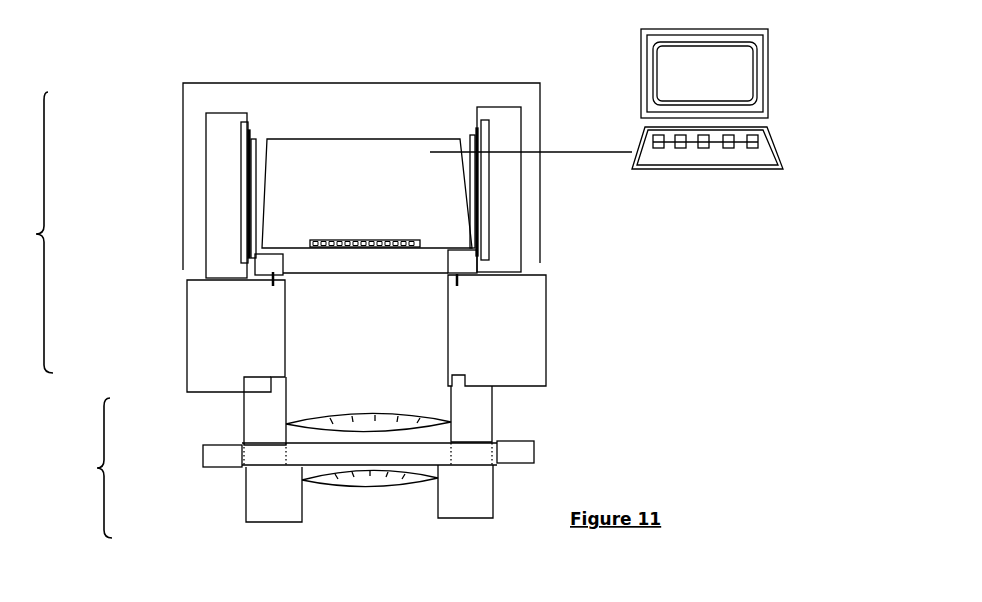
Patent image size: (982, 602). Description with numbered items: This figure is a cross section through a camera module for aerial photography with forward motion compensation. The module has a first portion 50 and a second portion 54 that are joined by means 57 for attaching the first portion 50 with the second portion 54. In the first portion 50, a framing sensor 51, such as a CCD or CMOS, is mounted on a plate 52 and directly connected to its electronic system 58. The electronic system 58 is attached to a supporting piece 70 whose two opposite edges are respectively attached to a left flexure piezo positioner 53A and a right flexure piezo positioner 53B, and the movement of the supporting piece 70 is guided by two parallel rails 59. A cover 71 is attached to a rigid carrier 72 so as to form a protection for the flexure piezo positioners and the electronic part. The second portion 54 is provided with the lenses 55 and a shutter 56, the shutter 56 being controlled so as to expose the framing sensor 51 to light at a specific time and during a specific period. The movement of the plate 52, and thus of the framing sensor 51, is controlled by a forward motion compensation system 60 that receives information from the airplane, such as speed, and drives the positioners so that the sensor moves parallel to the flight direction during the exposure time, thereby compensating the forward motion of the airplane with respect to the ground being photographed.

The first portion 50 is at (28, 232).
The framing sensor 51 is at (422, 240).
The plate 52 is at (242, 170).
The left flexure piezo positioner 53A is at (215, 183).
The right flexure piezo positioner 53B is at (512, 125).
The second portion 54 is at (82, 468).
The lenses 55 is at (453, 421).
The shutter 56 is at (517, 448).
The means for attaching 57 is at (465, 378).
The electronic system 58 is at (367, 163).
The rails 59 is at (272, 283).
The forward motion compensation system 60 is at (606, 99).
The supporting piece 70 is at (250, 263).
The cover 71 is at (460, 83).
The rigid carrier 72 is at (207, 355).